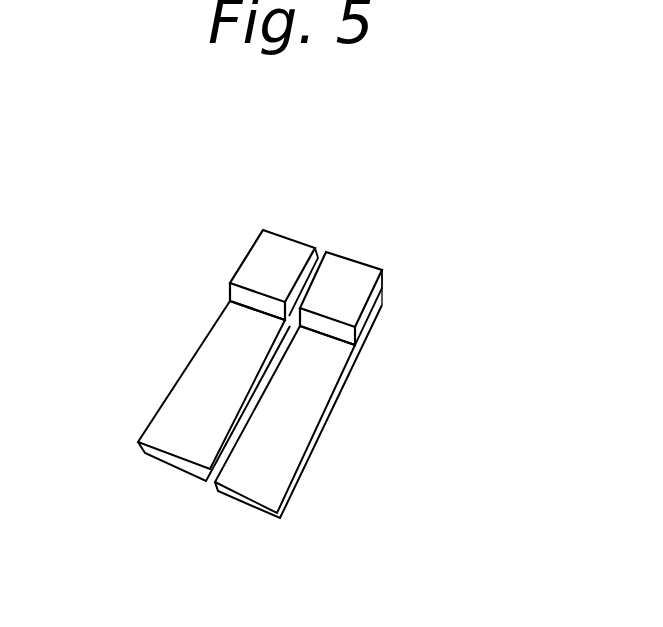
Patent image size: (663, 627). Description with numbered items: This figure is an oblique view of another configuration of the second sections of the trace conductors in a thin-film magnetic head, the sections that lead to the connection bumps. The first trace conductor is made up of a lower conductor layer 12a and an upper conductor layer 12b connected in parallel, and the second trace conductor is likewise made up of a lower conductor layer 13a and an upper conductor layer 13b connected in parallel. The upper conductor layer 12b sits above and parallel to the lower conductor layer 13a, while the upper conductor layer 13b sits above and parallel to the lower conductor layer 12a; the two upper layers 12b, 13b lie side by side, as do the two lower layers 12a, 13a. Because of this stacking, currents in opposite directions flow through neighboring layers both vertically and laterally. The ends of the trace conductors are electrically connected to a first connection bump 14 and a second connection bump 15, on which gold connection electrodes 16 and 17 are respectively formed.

The lower conductor layer 12a is at (172, 467).
The upper conductor layer 12b is at (292, 433).
The lower conductor layer 13a is at (243, 507).
The upper conductor layer 13b is at (183, 400).
The first connection bump 14 is at (352, 337).
The second connection bump 15 is at (234, 300).
The connection electrode 16 is at (357, 281).
The connection electrode 17 is at (271, 250).